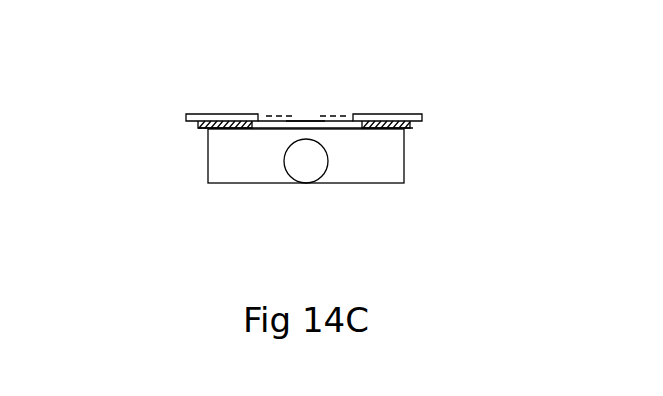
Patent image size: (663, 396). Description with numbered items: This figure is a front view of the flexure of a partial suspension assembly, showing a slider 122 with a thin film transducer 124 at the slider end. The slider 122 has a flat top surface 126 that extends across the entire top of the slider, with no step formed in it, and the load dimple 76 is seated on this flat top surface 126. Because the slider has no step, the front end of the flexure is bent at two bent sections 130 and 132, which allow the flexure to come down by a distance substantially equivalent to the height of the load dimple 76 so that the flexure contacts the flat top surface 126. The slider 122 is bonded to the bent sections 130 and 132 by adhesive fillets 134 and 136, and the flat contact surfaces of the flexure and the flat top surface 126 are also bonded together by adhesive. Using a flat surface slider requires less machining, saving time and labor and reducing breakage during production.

The bent section 130 is at (206, 114).
The bent section 132 is at (410, 114).
The flat top surface 126 is at (282, 126).
The load dimple 76 is at (300, 124).
The adhesive fillet 134 is at (198, 130).
The adhesive fillet 136 is at (410, 130).
The slider 122 is at (365, 172).
The thin film transducer 124 is at (300, 162).